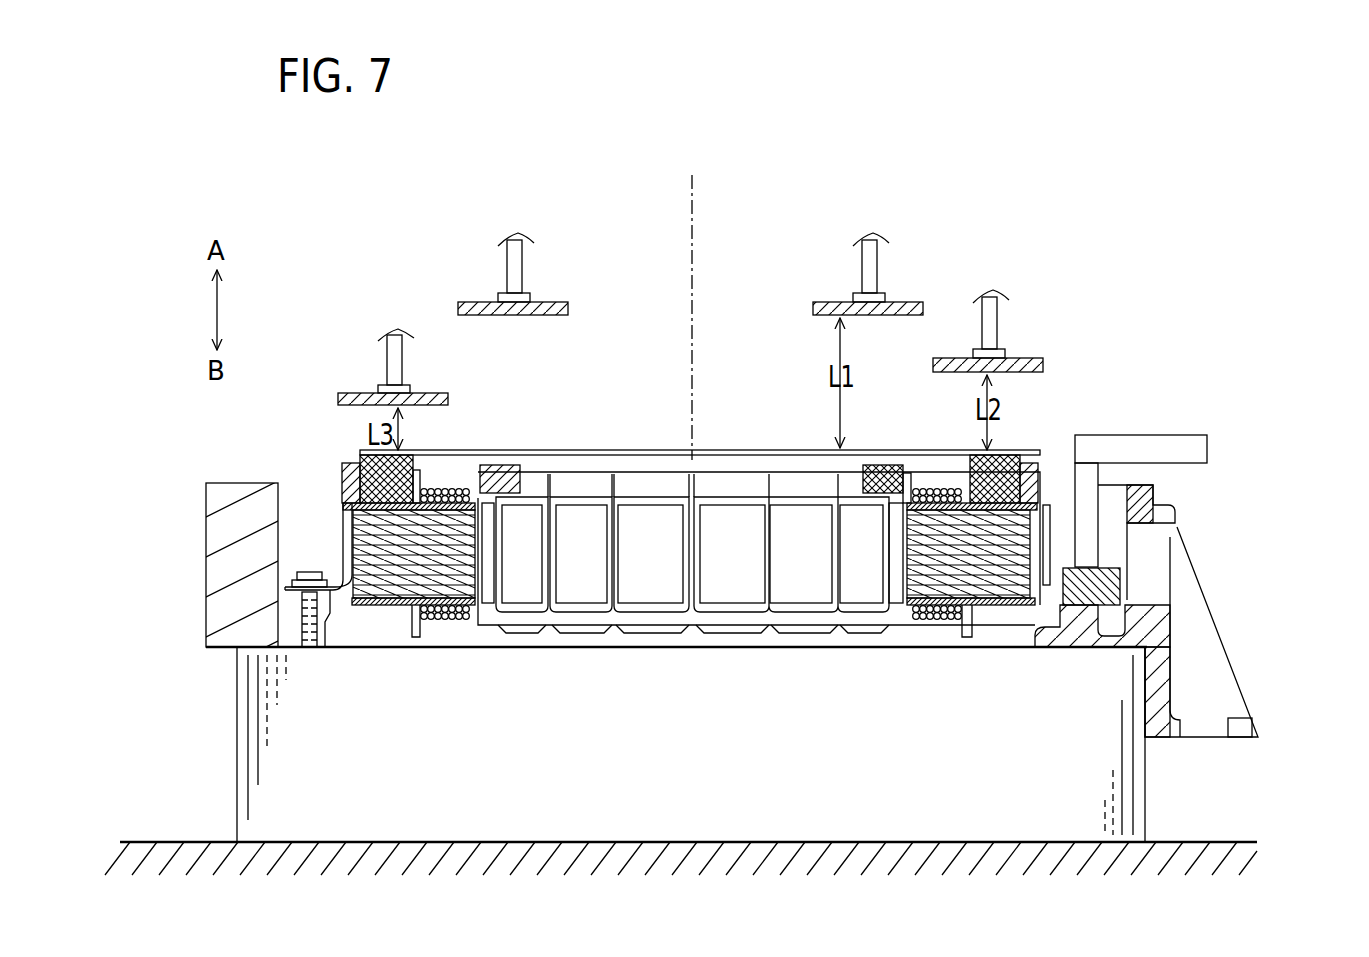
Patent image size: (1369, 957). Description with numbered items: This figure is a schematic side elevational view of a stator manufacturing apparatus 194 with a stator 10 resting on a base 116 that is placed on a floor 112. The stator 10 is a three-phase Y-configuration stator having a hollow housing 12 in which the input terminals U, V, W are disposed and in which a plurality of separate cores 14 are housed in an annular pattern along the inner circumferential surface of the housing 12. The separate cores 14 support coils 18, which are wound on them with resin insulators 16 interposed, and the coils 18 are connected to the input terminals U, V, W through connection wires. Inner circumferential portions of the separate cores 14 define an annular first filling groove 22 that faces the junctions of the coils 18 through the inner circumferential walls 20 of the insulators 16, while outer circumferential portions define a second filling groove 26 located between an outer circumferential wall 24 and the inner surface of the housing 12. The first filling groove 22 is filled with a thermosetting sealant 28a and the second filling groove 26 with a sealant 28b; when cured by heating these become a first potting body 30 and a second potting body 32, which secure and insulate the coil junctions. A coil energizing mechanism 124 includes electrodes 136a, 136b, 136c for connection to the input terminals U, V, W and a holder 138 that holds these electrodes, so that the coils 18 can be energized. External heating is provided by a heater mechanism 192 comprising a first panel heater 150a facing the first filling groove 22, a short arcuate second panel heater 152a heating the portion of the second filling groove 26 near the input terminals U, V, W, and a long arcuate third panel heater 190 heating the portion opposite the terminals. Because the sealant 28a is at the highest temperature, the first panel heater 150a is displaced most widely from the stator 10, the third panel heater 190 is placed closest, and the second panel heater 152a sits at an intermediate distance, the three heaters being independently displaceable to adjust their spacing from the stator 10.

The stator 10 is at (766, 418).
The housing 12 is at (1118, 649).
The separate cores 14 is at (355, 628).
The insulators 16 is at (385, 610).
The coils 18 is at (442, 622).
The inner circumferential walls 20 is at (532, 498).
The first filling groove 22 is at (893, 465).
The outer circumferential wall 24 is at (424, 466).
The second filling groove 26 is at (1015, 462).
The sealant 28a is at (503, 462).
The sealant 28b is at (360, 453).
The first potting body 30 is at (538, 441).
The second potting body 32 is at (335, 446).
The floor 112 is at (170, 840).
The base 116 is at (1070, 777).
The coil energizing mechanism 124 is at (1210, 484).
The electrode 136a is at (1085, 500).
The electrode 136b is at (1215, 538).
The electrode 136c is at (1215, 538).
The holder 138 is at (1205, 452).
The first panel heater 150a is at (822, 310).
The second panel heater 152a is at (1037, 357).
The third panel heater 190 is at (371, 367).
The heater mechanism 192 is at (357, 392).
The stator manufacturing apparatus 194 is at (1055, 131).
The input terminal U is at (1110, 582).
The input terminal V is at (1186, 586).
The input terminal W is at (1186, 586).